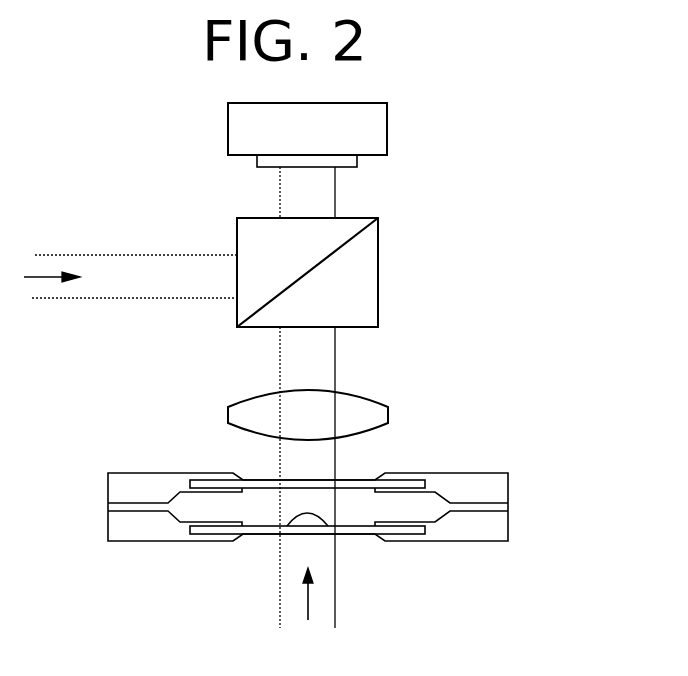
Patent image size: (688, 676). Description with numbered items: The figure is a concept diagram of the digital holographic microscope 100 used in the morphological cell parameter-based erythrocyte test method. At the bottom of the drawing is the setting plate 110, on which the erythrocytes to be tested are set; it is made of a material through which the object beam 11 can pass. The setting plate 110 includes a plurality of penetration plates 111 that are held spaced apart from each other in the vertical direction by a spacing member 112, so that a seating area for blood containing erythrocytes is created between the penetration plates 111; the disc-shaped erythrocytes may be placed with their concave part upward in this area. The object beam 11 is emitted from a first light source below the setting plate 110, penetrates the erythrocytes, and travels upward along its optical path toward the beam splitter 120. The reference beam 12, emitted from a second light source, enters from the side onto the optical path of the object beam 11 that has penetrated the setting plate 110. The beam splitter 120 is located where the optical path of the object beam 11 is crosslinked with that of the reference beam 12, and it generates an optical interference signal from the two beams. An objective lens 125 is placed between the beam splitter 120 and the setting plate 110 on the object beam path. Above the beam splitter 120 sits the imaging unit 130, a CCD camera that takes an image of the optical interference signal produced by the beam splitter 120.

The digital holographic microscope 100 is at (535, 258).
The setting plate 110 is at (369, 495).
The penetration plates 111 is at (367, 480).
The spacing member 112 is at (492, 484).
The object beam 11 is at (336, 590).
The reference beam 12 is at (162, 255).
The beam splitter 120 is at (378, 272).
The lens 125 is at (388, 405).
The imaging unit 130 is at (387, 128).